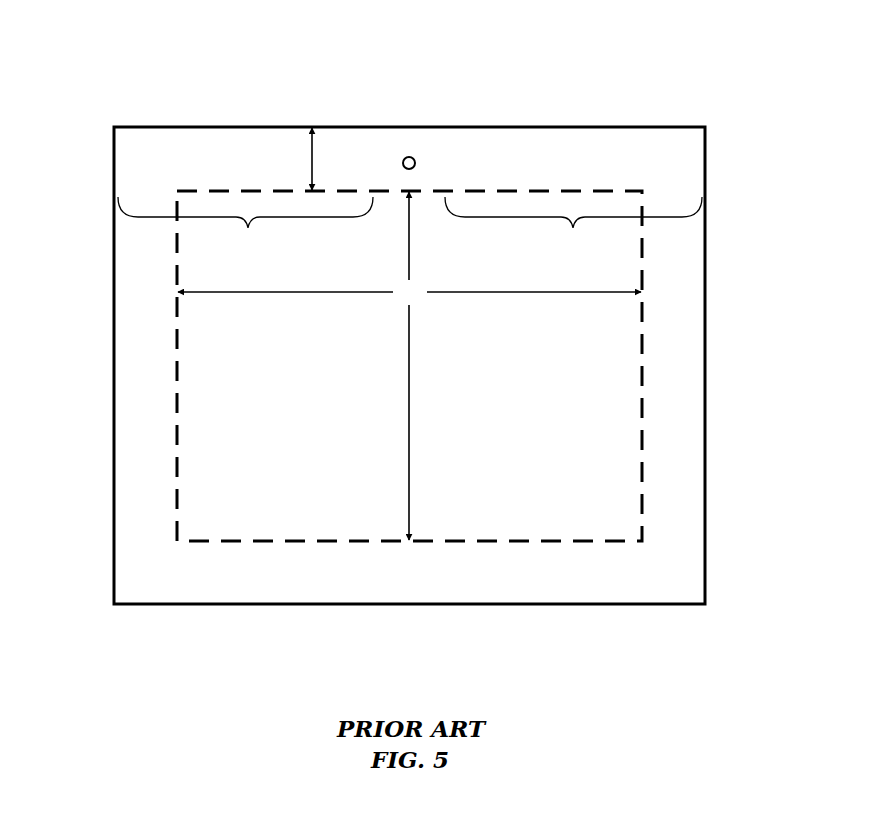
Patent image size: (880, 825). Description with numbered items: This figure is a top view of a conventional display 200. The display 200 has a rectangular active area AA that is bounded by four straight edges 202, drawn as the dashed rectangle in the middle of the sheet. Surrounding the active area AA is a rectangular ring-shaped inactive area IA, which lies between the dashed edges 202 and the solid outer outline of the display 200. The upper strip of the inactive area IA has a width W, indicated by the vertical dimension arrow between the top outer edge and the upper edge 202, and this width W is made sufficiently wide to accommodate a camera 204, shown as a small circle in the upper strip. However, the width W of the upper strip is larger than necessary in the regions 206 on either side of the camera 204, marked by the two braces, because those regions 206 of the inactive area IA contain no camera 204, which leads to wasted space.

The display 200 is at (594, 78).
The straight edges 202 is at (545, 190).
The camera 204 is at (409, 155).
The regions 206 is at (410, 224).
The inactive area IA is at (242, 138).
The width W is at (298, 159).
The active area AA is at (409, 366).